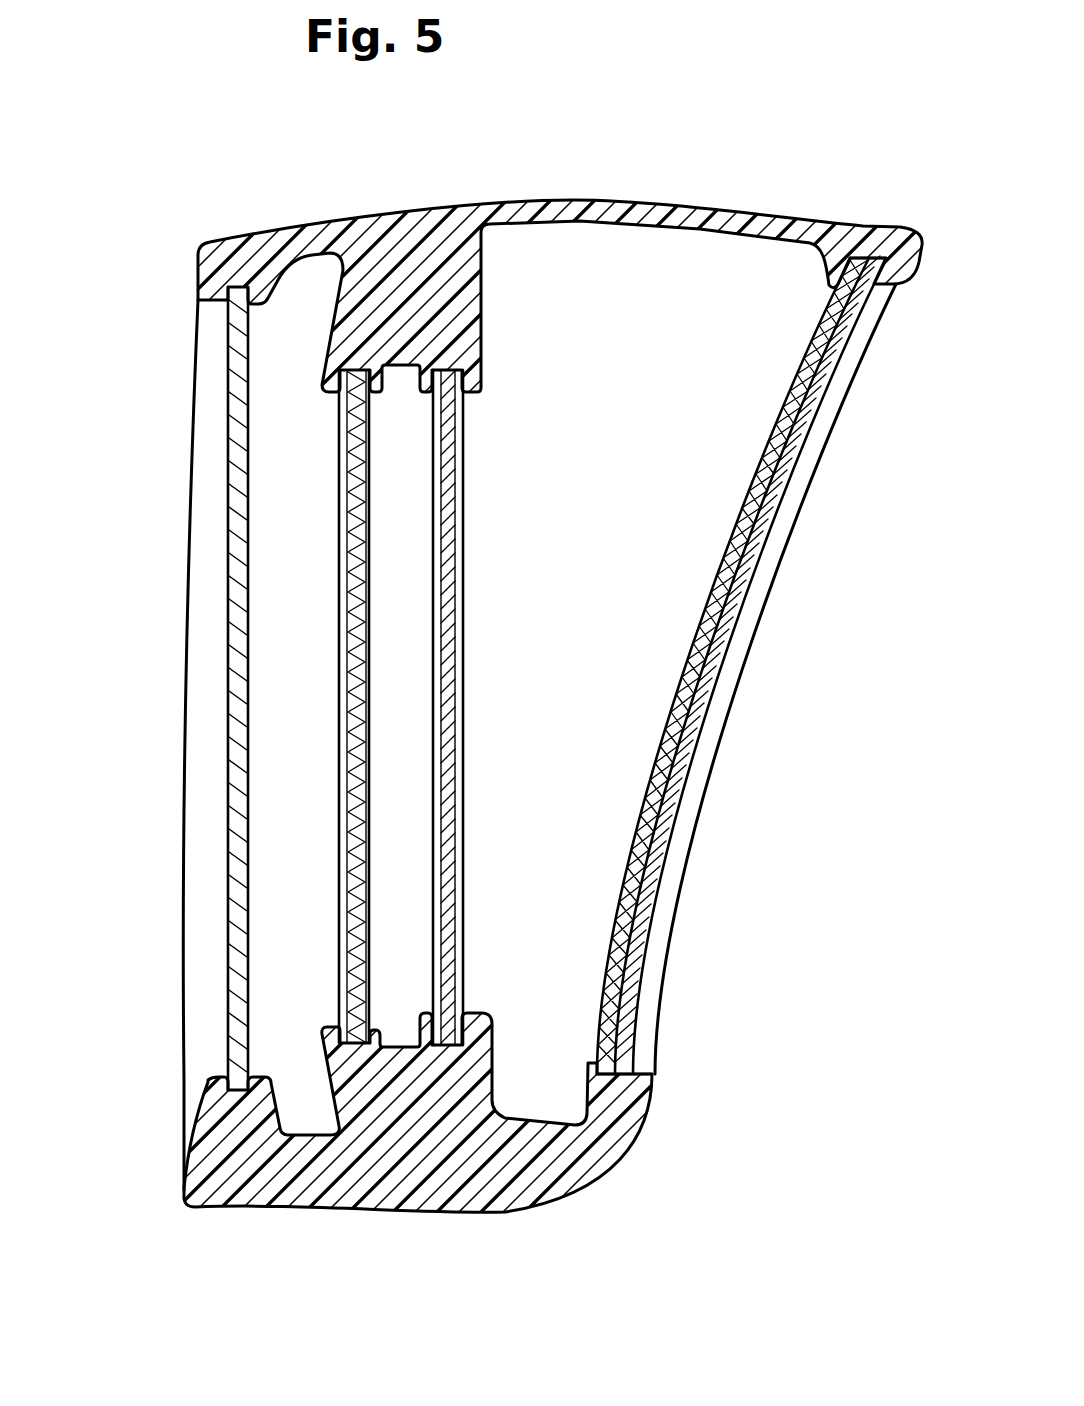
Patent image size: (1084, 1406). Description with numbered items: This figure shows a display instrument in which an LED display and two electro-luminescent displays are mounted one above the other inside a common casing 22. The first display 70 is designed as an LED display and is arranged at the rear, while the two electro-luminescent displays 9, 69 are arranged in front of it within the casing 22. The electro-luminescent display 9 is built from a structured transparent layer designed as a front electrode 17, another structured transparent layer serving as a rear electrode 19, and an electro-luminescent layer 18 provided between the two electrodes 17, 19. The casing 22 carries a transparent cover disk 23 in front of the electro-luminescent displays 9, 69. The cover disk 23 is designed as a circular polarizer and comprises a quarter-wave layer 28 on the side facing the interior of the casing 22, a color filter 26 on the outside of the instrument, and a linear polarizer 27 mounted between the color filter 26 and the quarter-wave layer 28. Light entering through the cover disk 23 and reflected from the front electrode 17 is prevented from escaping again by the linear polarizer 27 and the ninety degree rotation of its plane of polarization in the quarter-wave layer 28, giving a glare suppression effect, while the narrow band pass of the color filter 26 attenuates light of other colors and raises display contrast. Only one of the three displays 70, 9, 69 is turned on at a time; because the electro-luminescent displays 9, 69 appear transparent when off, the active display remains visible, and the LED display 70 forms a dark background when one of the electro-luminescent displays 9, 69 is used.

The casing 22 is at (554, 720).
The rear electrode 19 is at (481, 390).
The front electrode 17 is at (482, 1040).
The first display 70 is at (232, 347).
The electro-luminescent display 69 is at (380, 952).
The electro-luminescent display 9 is at (518, 707).
The electro-luminescent layer 18 is at (460, 700).
The cover disk 23 is at (748, 665).
The color filter 26 is at (800, 432).
The linear polarizer 27 is at (642, 903).
The λ/4 layer 28 is at (707, 608).